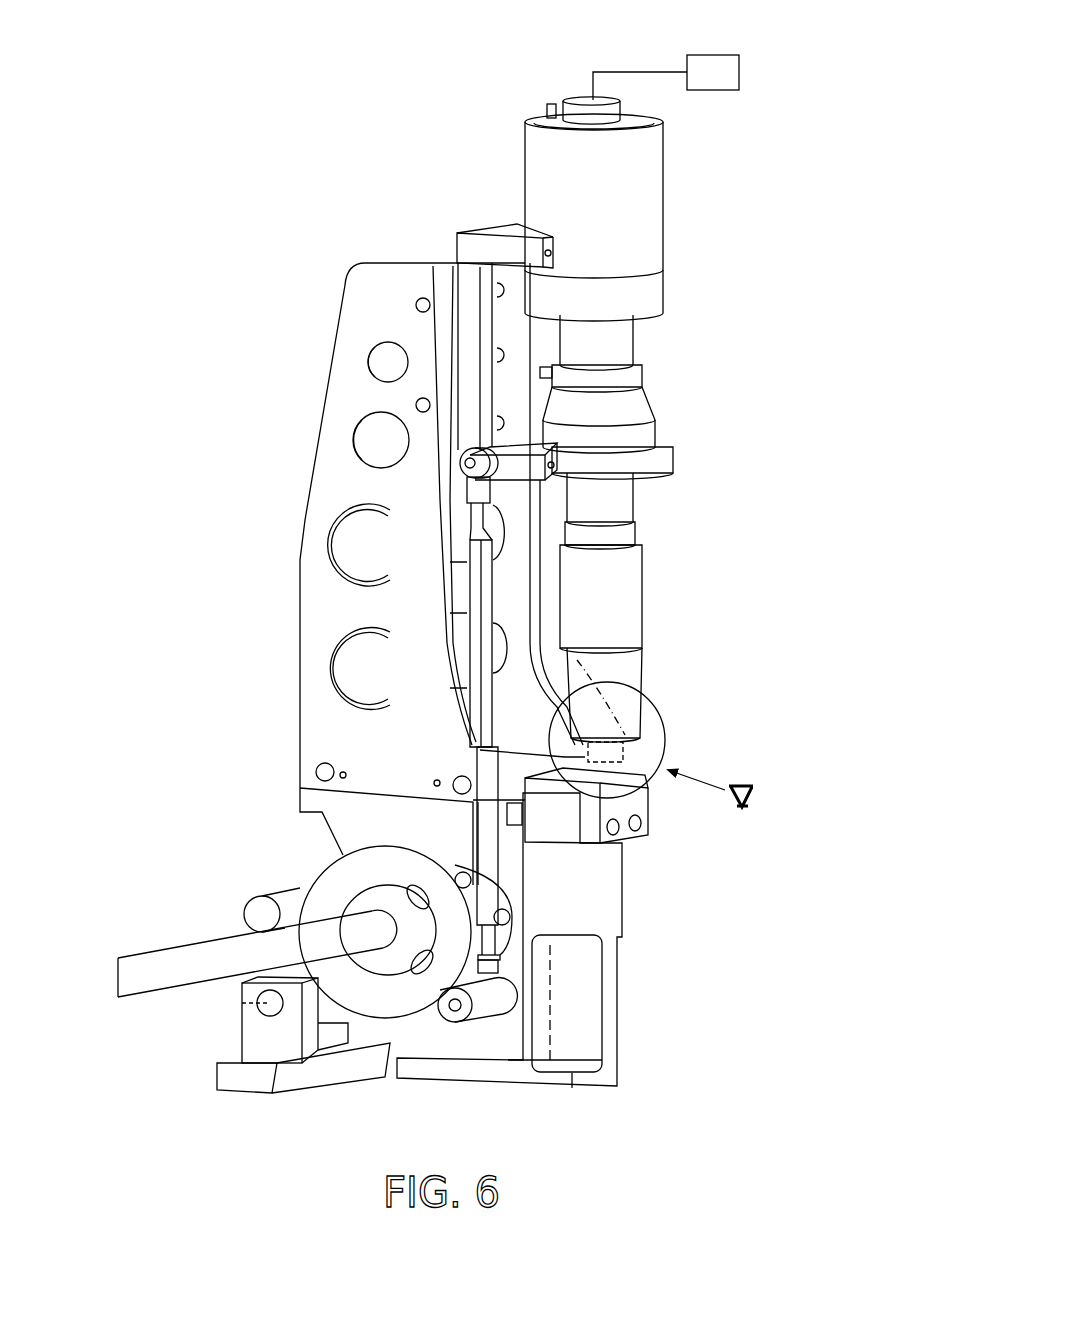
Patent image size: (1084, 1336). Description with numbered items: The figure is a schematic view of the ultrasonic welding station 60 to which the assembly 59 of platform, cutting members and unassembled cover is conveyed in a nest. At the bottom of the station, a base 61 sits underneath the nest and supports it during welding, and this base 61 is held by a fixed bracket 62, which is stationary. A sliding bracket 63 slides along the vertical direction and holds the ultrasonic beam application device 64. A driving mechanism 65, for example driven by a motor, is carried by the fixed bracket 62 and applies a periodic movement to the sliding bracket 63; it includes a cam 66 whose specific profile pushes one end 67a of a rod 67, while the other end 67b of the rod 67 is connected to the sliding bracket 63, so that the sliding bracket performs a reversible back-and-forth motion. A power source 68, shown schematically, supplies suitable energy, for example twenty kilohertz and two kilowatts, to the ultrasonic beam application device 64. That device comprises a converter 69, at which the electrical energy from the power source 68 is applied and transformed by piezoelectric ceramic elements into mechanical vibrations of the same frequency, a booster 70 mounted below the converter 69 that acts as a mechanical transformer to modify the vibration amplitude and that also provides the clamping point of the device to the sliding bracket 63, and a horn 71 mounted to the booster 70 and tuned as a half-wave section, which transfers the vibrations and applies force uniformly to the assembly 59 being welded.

The assembly 59 is at (626, 755).
The ultrasonic welding station 60 is at (314, 236).
The base 61 is at (638, 806).
The fixed bracket 62 is at (608, 903).
The sliding bracket 63 is at (502, 322).
The ultrasonic beam application device 64 is at (690, 317).
The driving mechanism 65 is at (262, 843).
The cam 66 is at (385, 990).
The rod 67 is at (470, 637).
The end of rod 67a is at (458, 1022).
The other end of rod 67b is at (466, 457).
The power source 68 is at (727, 55).
The converter 69 is at (641, 187).
The booster 70 is at (622, 512).
The horn 71 is at (630, 676).